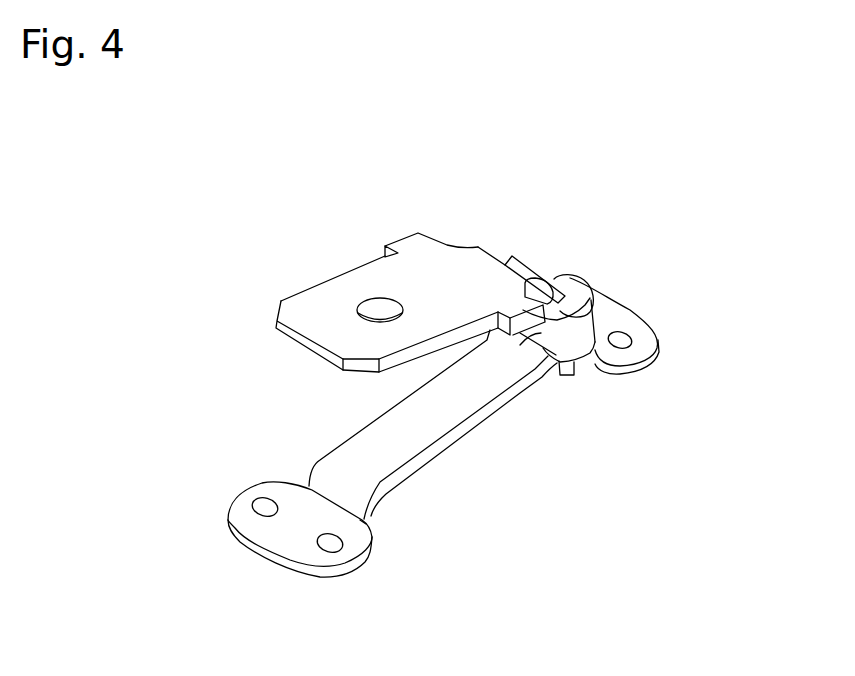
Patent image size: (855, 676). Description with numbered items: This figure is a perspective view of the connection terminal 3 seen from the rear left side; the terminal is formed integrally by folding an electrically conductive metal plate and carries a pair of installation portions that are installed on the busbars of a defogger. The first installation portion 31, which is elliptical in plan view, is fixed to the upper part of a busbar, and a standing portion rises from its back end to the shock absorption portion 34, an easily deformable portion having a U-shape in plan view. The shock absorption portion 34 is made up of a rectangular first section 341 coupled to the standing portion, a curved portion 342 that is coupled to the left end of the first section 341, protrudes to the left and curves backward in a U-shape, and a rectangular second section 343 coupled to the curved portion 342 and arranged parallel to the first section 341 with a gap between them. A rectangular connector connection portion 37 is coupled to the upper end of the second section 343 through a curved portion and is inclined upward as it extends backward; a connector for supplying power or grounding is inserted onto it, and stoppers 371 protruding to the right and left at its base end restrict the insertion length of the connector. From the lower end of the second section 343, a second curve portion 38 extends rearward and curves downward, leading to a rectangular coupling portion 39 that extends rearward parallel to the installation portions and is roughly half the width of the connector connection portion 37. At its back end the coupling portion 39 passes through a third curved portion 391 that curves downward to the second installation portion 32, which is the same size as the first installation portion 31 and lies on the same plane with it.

The connection terminal 3 is at (182, 357).
The first installation portion 31 is at (627, 317).
The second installation portion 32 is at (277, 537).
The shock absorption portion 34 is at (540, 250).
The first section 341 is at (554, 281).
The curved portion 342 is at (580, 336).
The second section 343 is at (541, 333).
The connector connection portion 37 is at (330, 296).
The stoppers 371 is at (406, 244).
The second curve portion 38 is at (563, 378).
The coupling portion 39 is at (431, 426).
The third curved portion 391 is at (364, 508).